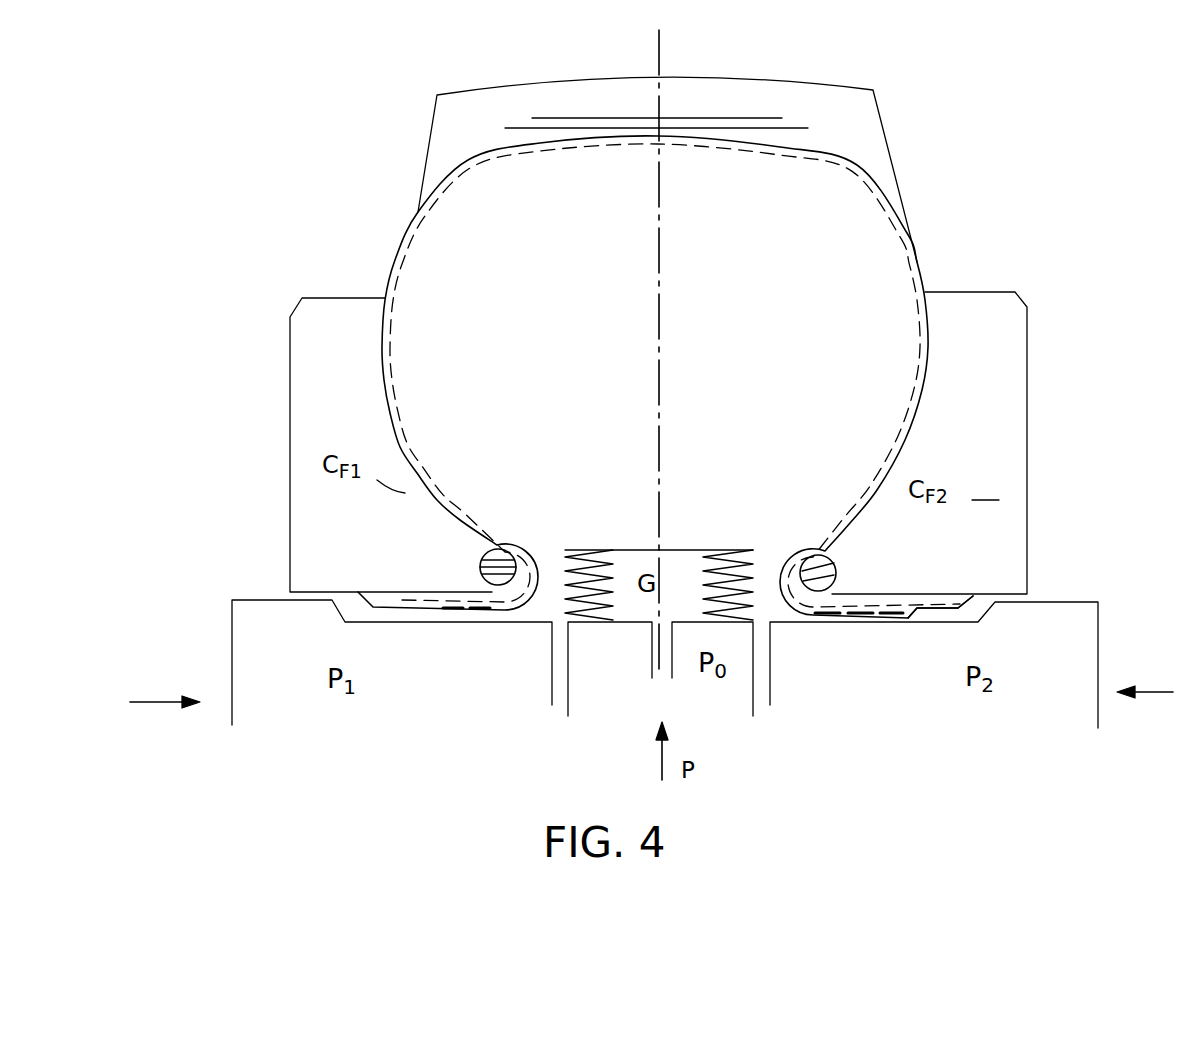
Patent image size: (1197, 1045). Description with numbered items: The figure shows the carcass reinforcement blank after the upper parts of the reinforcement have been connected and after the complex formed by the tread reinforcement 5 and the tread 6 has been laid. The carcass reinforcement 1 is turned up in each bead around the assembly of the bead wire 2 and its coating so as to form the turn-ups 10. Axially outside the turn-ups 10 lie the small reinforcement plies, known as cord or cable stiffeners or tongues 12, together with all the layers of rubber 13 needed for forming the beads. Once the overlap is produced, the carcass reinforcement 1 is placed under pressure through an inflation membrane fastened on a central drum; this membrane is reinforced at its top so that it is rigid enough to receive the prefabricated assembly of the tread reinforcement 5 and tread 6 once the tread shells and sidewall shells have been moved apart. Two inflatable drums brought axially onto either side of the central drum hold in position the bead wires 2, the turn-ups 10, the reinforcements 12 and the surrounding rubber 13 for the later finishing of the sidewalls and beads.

The carcass reinforcement 1 is at (398, 306).
The bead wire 2 is at (822, 575).
The tread reinforcement 5 is at (782, 123).
The tread 6 is at (573, 90).
The turn-up 10 is at (907, 602).
The stiffener 12 is at (453, 602).
The layer of rubber 13 is at (793, 616).